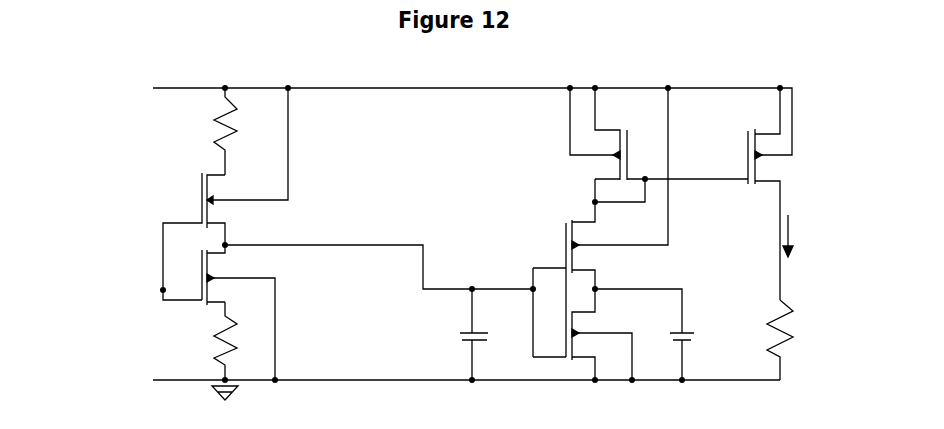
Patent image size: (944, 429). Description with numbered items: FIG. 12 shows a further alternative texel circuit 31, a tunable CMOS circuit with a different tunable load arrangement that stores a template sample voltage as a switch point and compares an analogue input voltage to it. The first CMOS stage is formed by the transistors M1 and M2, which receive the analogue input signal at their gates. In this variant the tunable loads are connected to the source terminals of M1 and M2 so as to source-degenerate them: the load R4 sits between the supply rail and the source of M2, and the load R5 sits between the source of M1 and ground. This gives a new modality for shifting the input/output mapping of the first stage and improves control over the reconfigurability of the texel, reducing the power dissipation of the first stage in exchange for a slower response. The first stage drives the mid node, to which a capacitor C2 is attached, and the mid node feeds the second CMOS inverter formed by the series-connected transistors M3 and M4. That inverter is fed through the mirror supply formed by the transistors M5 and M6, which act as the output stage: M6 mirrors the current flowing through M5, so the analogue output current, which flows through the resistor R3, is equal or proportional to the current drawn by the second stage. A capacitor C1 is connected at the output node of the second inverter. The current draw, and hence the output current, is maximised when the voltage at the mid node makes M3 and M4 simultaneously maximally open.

The output stage circuit 31 is at (161, 156).
The first CMOS stage transistor M1 is at (241, 312).
The first CMOS stage transistor M2 is at (225, 194).
The second CMOS inverter transistor M3 is at (620, 189).
The second CMOS inverter transistor M4 is at (611, 335).
The mirror supply transistor M5 is at (790, 194).
The mirror supply transistor M6 is at (642, 145).
The resistor R3 (1k) R3 is at (767, 340).
The resistor R4 (9Meg) R4 is at (250, 131).
The resistor R5 (1Meg) R5 is at (250, 341).
The capacitor C1 (1p) C1 is at (653, 334).
The capacitor C2 (1p) C2 is at (486, 327).